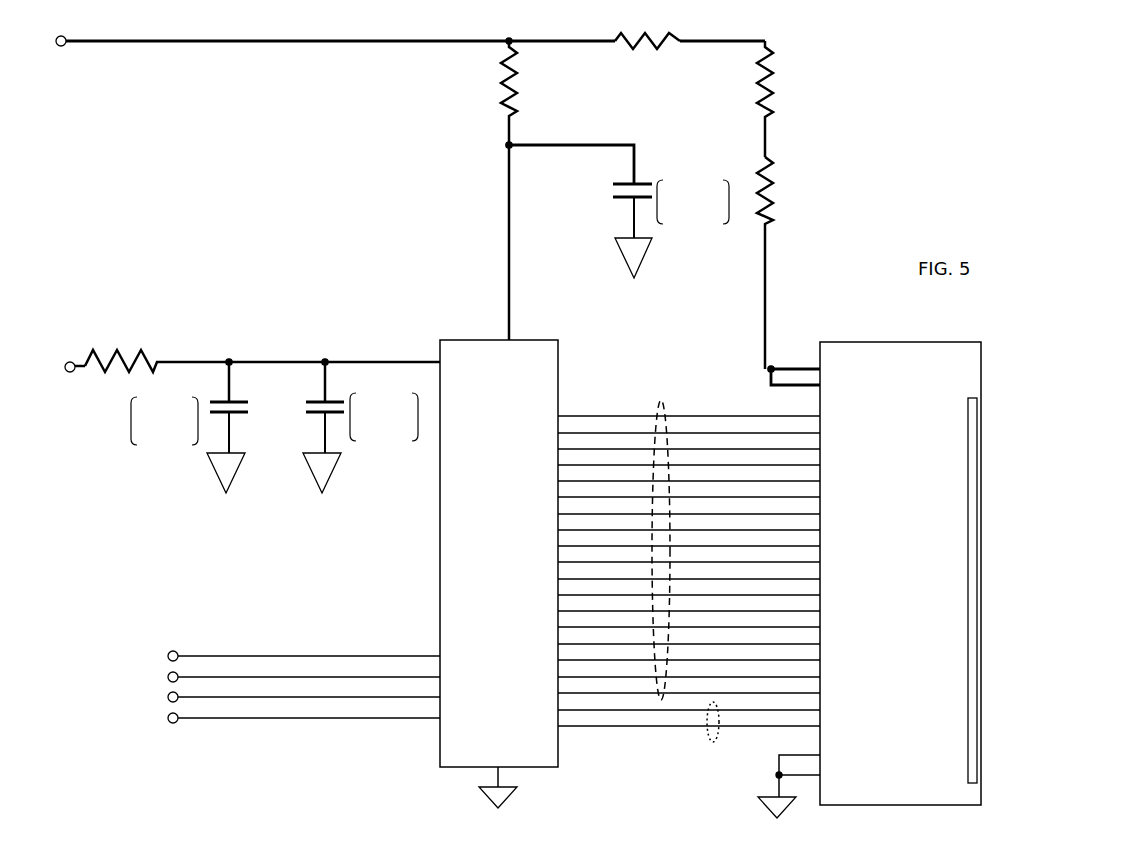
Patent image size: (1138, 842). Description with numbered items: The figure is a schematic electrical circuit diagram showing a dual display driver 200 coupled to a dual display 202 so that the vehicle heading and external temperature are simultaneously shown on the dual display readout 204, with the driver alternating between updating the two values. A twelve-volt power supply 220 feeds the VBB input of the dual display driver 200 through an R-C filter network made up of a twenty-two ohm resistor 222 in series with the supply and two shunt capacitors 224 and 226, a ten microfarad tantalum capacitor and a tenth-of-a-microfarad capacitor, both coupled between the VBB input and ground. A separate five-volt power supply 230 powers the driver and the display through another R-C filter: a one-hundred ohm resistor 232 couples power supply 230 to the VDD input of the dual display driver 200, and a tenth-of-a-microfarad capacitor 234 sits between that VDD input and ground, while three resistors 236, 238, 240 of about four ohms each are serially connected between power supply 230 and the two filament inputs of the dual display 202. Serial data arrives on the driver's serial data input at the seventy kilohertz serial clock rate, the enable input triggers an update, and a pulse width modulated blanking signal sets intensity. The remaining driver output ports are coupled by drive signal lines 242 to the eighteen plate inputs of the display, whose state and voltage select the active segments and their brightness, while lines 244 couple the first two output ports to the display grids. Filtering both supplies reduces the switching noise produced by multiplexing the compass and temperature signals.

The dual display driver 200 is at (365, 476).
The dual display 202 is at (869, 568).
The dual display readout 204 is at (1043, 590).
The power supply 220 is at (59, 370).
The resistor 222 is at (262, 346).
The capacitor 224 is at (189, 426).
The capacitor 226 is at (349, 426).
The power supply 230 is at (265, 45).
The resistor 232 is at (520, 91).
The capacitor 234 is at (617, 210).
The resistor 236 is at (637, 44).
The resistor 238 is at (781, 99).
The resistor 240 is at (781, 263).
The drive signal lines 242 is at (689, 539).
The lines 244 is at (689, 737).